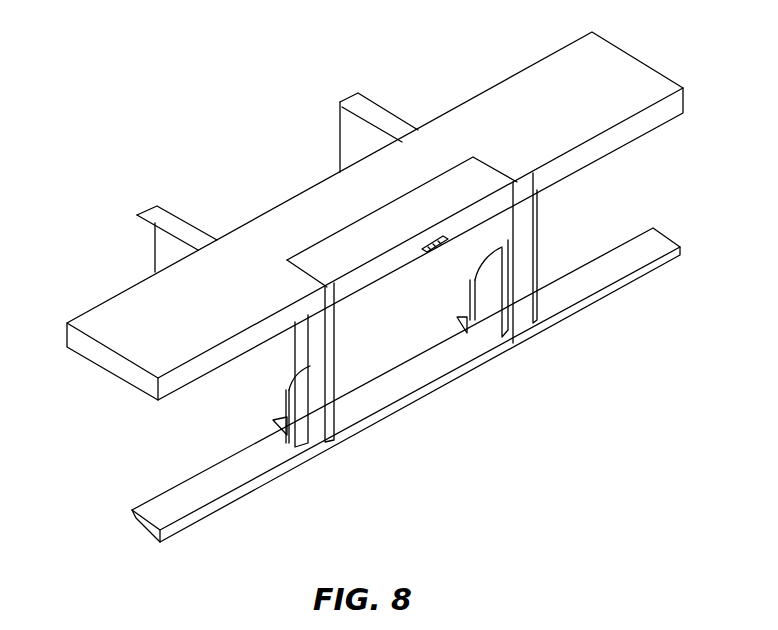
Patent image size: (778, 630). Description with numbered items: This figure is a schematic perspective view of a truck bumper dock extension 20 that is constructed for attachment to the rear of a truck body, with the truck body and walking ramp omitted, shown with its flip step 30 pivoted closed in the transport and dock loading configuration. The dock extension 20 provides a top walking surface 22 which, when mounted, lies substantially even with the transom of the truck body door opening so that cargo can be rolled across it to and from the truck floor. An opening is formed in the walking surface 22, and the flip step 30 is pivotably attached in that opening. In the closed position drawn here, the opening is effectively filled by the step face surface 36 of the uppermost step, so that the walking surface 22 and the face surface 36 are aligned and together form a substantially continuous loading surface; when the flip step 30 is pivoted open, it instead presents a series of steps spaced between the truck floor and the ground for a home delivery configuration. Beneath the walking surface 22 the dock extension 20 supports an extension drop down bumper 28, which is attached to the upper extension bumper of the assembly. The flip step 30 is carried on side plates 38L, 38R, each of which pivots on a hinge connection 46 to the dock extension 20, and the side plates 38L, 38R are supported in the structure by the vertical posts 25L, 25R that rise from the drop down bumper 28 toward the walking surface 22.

The truck bumper dock extension 20 is at (652, 50).
The top walking surface 22 is at (563, 68).
The step face surface 36 is at (385, 222).
The flip step 30 is at (480, 243).
The extension drop down bumper 28 is at (345, 210).
The left post 25L is at (322, 393).
The right post 25R is at (527, 277).
The left side plate 38L is at (262, 383).
The right side plate 38R is at (442, 278).
The hinge connection 46 is at (306, 432).